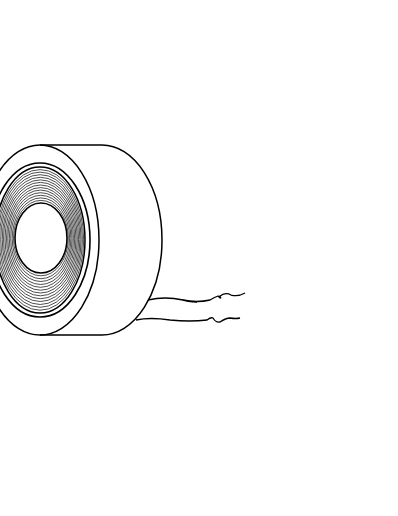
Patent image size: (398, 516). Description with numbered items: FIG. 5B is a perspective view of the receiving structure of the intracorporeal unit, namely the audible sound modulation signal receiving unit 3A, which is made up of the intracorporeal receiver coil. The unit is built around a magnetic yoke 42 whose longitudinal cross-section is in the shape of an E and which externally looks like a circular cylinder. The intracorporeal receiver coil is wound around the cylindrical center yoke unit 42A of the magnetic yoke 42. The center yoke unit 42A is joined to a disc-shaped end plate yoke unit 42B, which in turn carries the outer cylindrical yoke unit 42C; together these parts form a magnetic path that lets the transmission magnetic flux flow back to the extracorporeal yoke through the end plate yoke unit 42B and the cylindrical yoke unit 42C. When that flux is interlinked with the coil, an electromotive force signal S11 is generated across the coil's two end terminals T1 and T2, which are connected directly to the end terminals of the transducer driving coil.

The audible sound modulation signal receiving unit 3A is at (50, 67).
The magnetic yoke 42 is at (97, 144).
The center yoke unit 42A is at (33, 250).
The end plate yoke unit 42B is at (150, 184).
The cylindrical yoke unit 42C is at (38, 153).
The electromotive force signal S11 is at (188, 302).
The end terminal T1 is at (208, 295).
The end terminal T2 is at (198, 320).